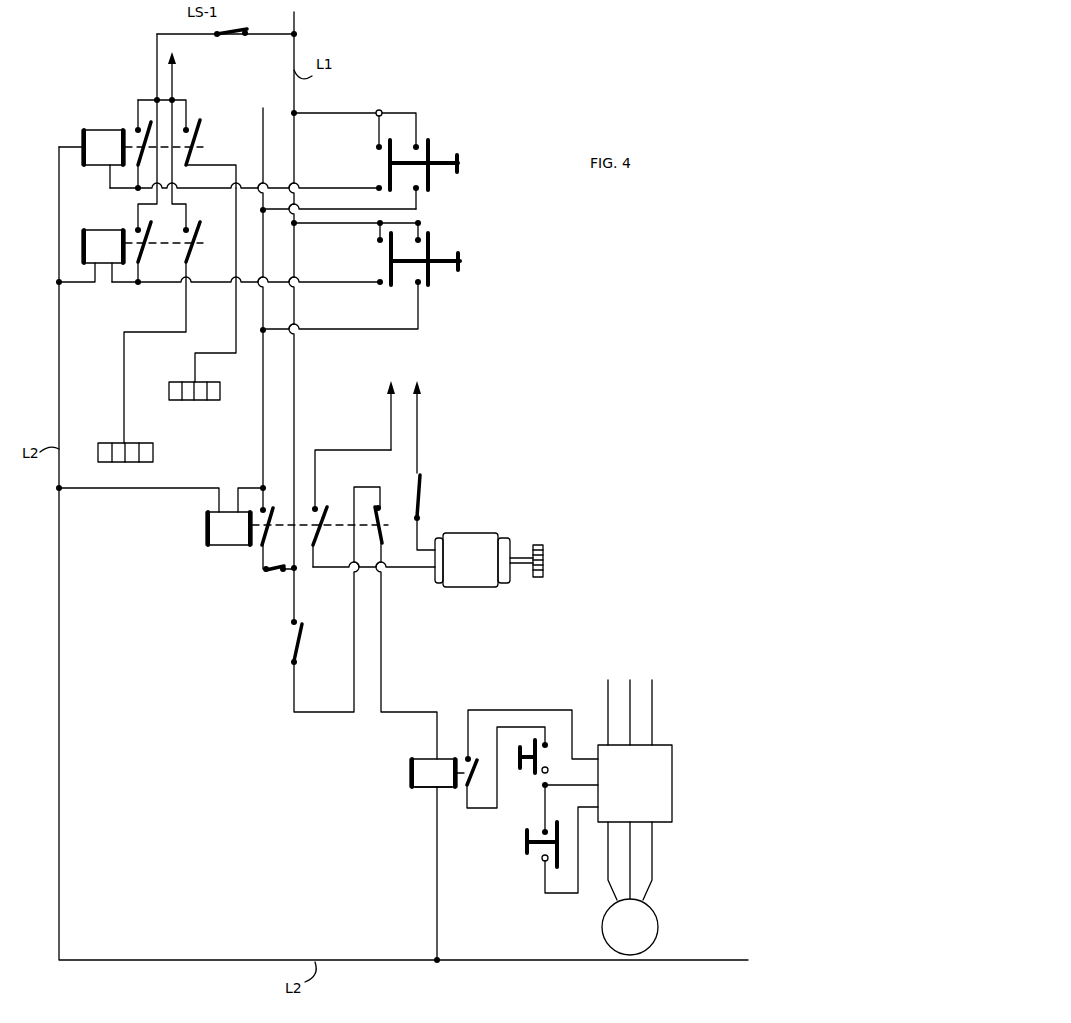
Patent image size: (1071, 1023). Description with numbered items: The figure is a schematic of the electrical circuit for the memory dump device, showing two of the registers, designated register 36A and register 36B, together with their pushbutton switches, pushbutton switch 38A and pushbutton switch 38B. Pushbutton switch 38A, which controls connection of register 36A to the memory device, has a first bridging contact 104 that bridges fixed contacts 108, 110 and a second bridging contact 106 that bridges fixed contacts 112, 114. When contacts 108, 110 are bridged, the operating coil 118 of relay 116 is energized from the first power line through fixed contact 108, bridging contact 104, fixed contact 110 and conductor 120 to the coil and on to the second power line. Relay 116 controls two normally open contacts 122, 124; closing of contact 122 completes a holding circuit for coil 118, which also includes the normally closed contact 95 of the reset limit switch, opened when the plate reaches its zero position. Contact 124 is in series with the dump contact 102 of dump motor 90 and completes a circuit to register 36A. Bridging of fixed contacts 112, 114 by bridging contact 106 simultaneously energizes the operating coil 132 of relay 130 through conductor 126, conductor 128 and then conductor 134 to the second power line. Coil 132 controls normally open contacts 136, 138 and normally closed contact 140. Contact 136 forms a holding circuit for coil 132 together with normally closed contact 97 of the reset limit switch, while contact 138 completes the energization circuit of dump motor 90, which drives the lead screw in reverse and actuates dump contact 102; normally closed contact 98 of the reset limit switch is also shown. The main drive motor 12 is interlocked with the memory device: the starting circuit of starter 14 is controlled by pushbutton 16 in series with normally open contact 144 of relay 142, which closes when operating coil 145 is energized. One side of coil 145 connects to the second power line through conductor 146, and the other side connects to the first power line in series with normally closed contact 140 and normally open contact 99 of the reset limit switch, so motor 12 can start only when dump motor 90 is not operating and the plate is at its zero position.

The normally closed contact 95 is at (218, 30).
The dump contact 102 is at (215, 140).
The relay 116 is at (110, 112).
The operating coil 118 is at (96, 130).
The normally open contact 122 is at (133, 130).
The normally open contact 124 is at (200, 127).
The conductor 120 is at (312, 186).
The conductor 126 is at (350, 209).
The conductor 128 is at (263, 438).
The fixed contact 108 is at (378, 147).
The fixed contact 112 is at (416, 144).
The first bridging contact 104 is at (387, 160).
The second bridging contact 106 is at (430, 160).
The fixed contact 110 is at (380, 190).
The fixed contact 114 is at (418, 190).
The pushbutton switch 38A is at (430, 158).
The pushbutton switch 38B is at (462, 261).
The register 36A is at (203, 401).
The register 36B is at (140, 462).
The conductor 134 is at (160, 490).
The relay 130 is at (215, 552).
The operating coil 132 is at (238, 546).
The normally open contact 136 is at (278, 510).
The normally open contact 138 is at (328, 506).
The normally closed contact 140 is at (382, 514).
The normally closed contact 97 is at (278, 578).
The normally closed contact 98 is at (421, 502).
The normally open contact 99 is at (303, 642).
The dump motor 90 is at (470, 548).
The relay 142 is at (409, 773).
The normally open contact 144 is at (480, 766).
The operating coil 145 is at (431, 782).
The conductor 146 is at (437, 887).
The pushbutton 16 is at (531, 771).
The starter 14 is at (642, 803).
The main drive motor 12 is at (639, 937).